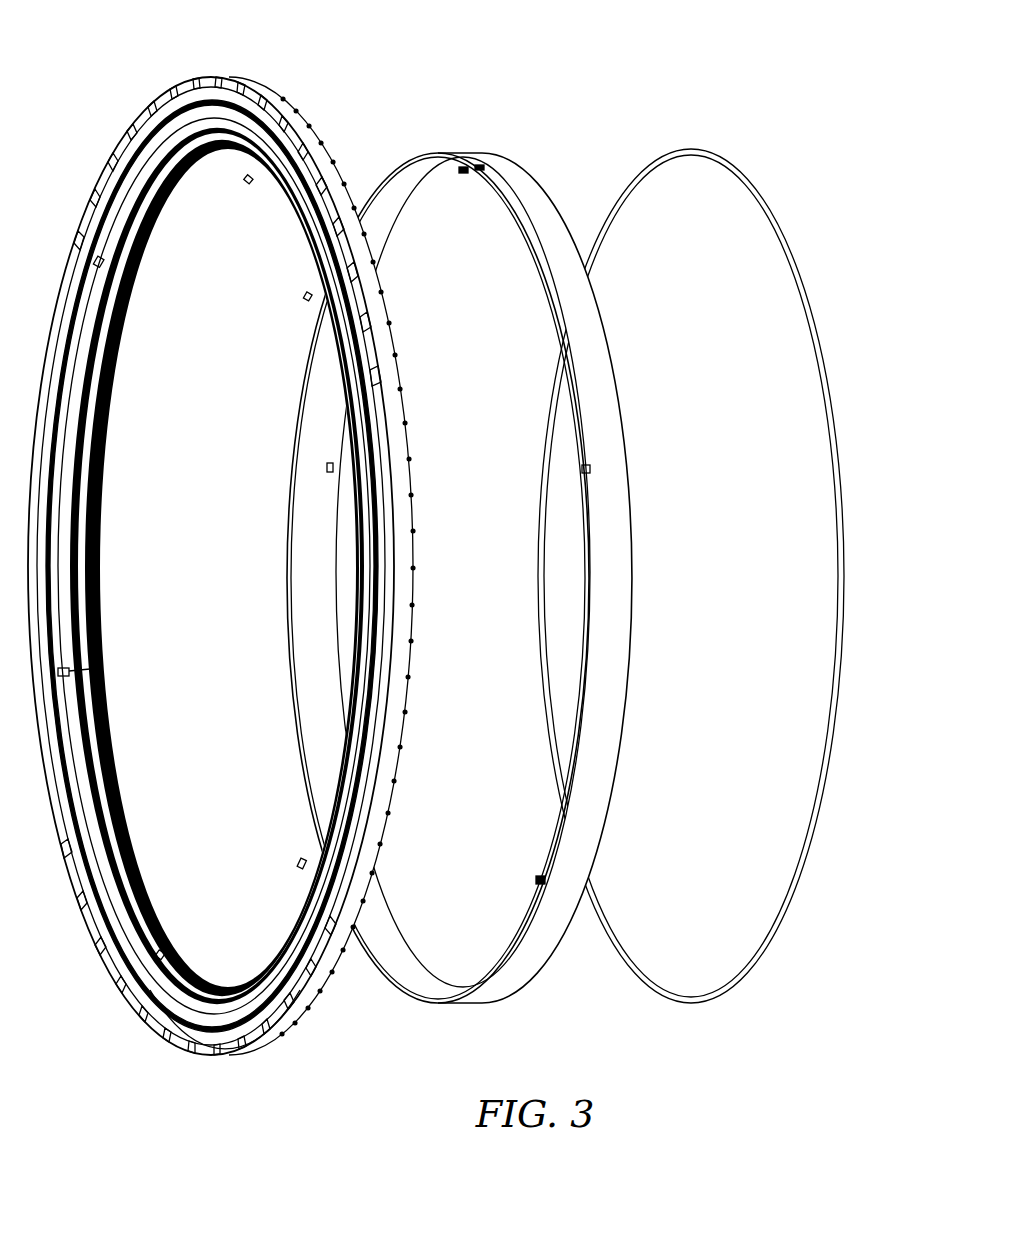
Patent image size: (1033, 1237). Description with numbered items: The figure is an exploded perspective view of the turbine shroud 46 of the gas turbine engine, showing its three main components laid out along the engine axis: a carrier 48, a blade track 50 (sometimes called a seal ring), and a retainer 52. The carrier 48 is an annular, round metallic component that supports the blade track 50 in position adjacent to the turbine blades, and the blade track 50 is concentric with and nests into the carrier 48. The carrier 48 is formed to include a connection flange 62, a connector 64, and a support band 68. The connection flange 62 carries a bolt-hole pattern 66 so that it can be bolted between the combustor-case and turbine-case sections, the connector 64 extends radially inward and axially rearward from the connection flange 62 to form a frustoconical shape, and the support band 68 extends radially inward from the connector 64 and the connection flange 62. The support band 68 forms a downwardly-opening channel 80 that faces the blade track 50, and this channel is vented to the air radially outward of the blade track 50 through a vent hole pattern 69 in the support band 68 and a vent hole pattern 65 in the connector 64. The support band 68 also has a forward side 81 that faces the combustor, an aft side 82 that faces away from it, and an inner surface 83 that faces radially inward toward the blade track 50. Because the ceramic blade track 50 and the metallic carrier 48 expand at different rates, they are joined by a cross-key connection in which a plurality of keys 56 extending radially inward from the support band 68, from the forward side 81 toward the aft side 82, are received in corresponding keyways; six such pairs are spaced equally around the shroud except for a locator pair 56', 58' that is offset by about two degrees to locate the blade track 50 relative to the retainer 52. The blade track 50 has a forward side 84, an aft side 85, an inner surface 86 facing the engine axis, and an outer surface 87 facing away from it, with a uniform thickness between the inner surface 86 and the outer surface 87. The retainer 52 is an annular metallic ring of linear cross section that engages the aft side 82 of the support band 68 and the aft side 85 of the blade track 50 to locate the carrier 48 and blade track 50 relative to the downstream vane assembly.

The turbine shroud 46 is at (617, 100).
The carrier 48 is at (220, 530).
The blade track 50 is at (419, 574).
The retainer 52 is at (708, 148).
The keys 56 is at (182, 567).
The locator key 56' is at (283, 444).
The locator keyway 58' is at (536, 486).
The connection flange 62 is at (233, 73).
The connector 64 is at (320, 150).
The vent hole pattern 65 is at (345, 180).
The bolt-hole pattern 66 is at (172, 97).
The support band 68 is at (318, 262).
The vent hole pattern 69 is at (267, 987).
The downwardly-opening channel 80 is at (202, 178).
The forward side 81 is at (312, 244).
The aft side 82 is at (147, 252).
The inner surface 83 is at (326, 284).
The forward side 84 is at (528, 236).
The aft side 85 is at (562, 206).
The inner surface 86 is at (541, 281).
The outer surface 87 is at (525, 188).